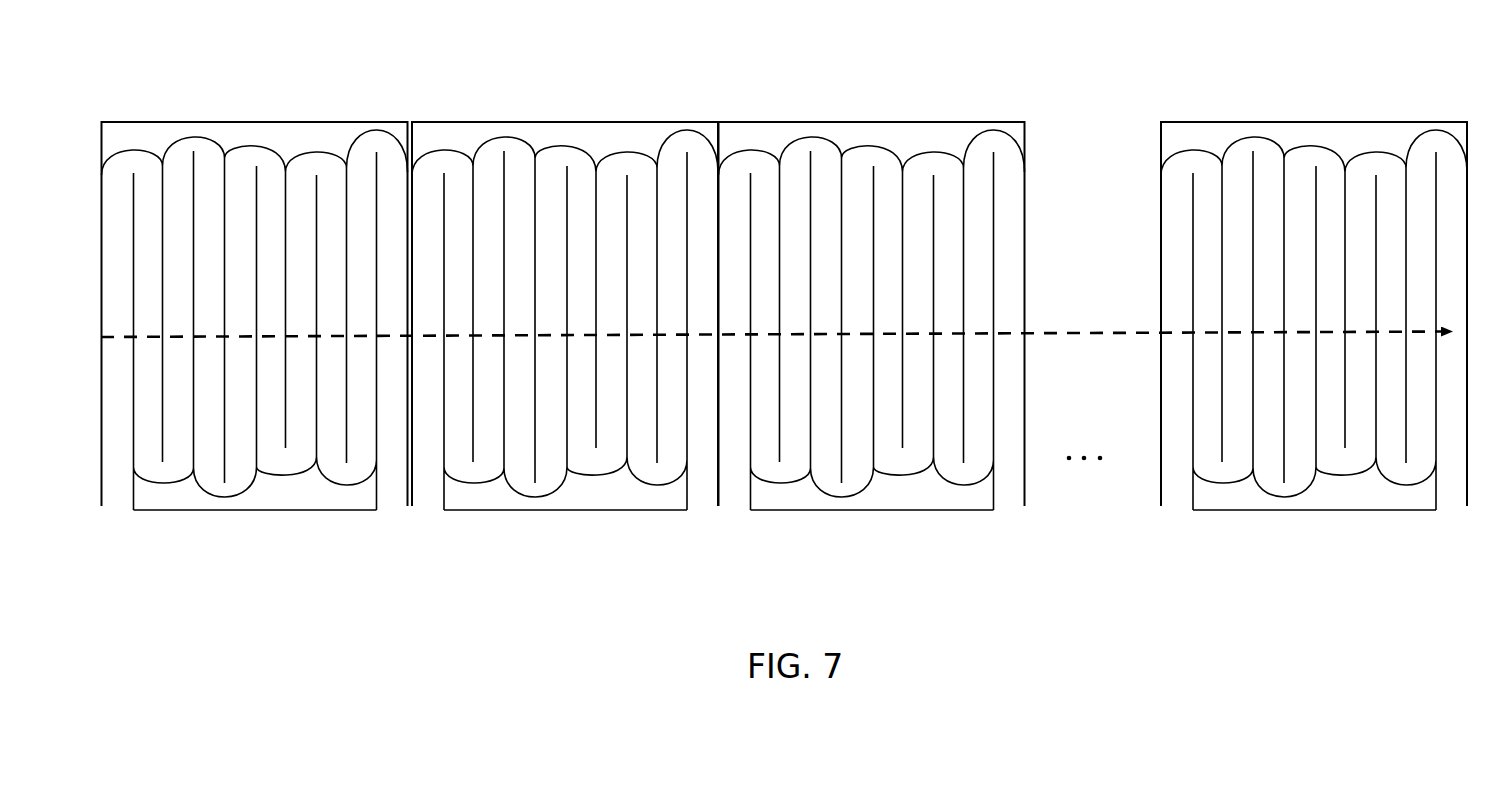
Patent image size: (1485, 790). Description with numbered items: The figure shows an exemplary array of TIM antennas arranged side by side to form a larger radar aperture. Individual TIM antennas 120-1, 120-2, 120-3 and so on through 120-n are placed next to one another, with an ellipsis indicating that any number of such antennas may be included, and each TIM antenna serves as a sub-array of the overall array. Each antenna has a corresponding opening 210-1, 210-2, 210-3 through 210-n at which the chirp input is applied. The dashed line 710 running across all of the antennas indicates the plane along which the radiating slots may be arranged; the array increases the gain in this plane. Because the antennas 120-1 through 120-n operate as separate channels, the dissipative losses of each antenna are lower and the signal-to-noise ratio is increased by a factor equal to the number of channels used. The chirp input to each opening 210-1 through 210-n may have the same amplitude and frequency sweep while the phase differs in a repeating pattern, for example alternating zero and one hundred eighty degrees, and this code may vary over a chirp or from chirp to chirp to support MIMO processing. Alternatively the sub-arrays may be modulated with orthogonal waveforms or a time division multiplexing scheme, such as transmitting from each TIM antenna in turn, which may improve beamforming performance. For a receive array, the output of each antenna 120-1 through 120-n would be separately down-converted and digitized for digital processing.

The TIM antenna 120-1 is at (255, 326).
The TIM antenna 120-2 is at (565, 329).
The TIM antenna 120-3 is at (872, 329).
The TIM antenna 120-n is at (1314, 330).
The opening 210-1 is at (120, 506).
The opening 210-2 is at (428, 512).
The opening 210-3 is at (729, 510).
The opening 210-n is at (1174, 510).
The dashed line 710 is at (1114, 331).